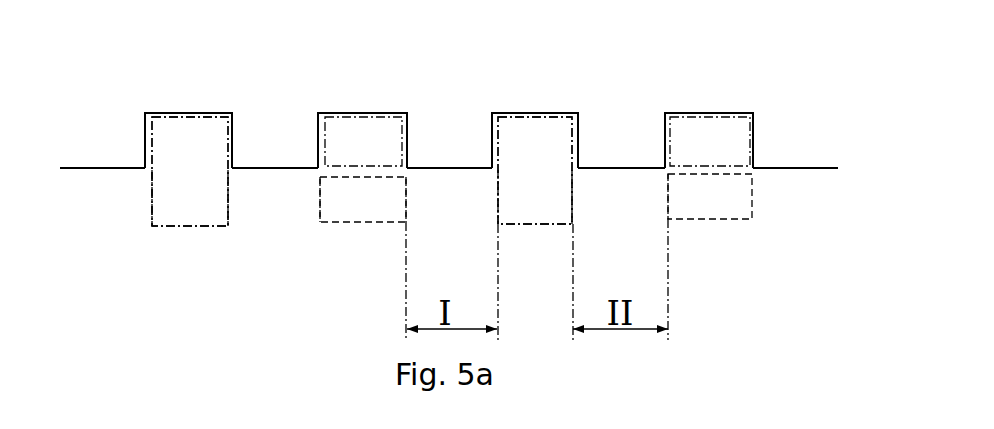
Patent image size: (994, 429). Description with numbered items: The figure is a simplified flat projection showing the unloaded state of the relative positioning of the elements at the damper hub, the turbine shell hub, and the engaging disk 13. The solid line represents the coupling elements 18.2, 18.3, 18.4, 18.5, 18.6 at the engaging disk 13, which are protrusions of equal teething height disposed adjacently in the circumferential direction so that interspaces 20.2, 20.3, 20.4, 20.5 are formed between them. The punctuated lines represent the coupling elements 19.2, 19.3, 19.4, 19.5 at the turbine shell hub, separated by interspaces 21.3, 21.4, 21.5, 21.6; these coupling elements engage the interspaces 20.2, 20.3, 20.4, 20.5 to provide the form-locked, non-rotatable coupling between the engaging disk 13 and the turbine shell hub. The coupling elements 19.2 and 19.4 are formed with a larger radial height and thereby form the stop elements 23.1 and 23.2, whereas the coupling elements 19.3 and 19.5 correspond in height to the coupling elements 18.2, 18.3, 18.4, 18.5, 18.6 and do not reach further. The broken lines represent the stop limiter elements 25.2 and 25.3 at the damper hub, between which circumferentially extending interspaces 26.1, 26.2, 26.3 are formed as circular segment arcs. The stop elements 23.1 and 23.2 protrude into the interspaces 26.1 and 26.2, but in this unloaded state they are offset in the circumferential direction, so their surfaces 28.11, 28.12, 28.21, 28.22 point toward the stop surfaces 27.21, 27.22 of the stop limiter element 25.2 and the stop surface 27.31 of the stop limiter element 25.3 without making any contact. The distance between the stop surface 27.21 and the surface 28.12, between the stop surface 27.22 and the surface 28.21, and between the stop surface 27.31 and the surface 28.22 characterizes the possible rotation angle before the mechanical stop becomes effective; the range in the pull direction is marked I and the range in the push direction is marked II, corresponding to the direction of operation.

The engaging disk 13 is at (72, 169).
The coupling element 18.2 is at (104, 168).
The coupling element 18.3 is at (280, 168).
The coupling element 18.4 is at (451, 168).
The coupling element 18.5 is at (624, 168).
The coupling element 18.6 is at (804, 168).
The coupling element 19.2 is at (203, 130).
The coupling element 19.3 is at (378, 130).
The coupling element 19.4 is at (545, 130).
The coupling element 19.5 is at (722, 130).
The interspace 20.2 is at (171, 113).
The interspace 20.3 is at (343, 113).
The interspace 20.4 is at (510, 113).
The interspace 20.5 is at (688, 112).
The interspace 21.3 is at (302, 97).
The interspace 21.4 is at (473, 97).
The interspace 21.5 is at (646, 97).
The interspace 21.6 is at (827, 97).
The stop element 23.1 is at (209, 117).
The stop element 23.2 is at (561, 118).
The stop limiter element 25.2 is at (372, 210).
The stop limiter element 25.3 is at (728, 208).
The interspace 26.1 is at (88, 190).
The interspace 26.2 is at (280, 217).
The interspace 26.3 is at (837, 217).
The stop surface 27.21 is at (322, 178).
The stop surface 27.22 is at (407, 188).
The stop surface 27.31 is at (668, 178).
The surface 28.11 is at (146, 183).
The surface 28.12 is at (233, 183).
The surface 28.21 is at (499, 179).
The surface 28.22 is at (573, 180).